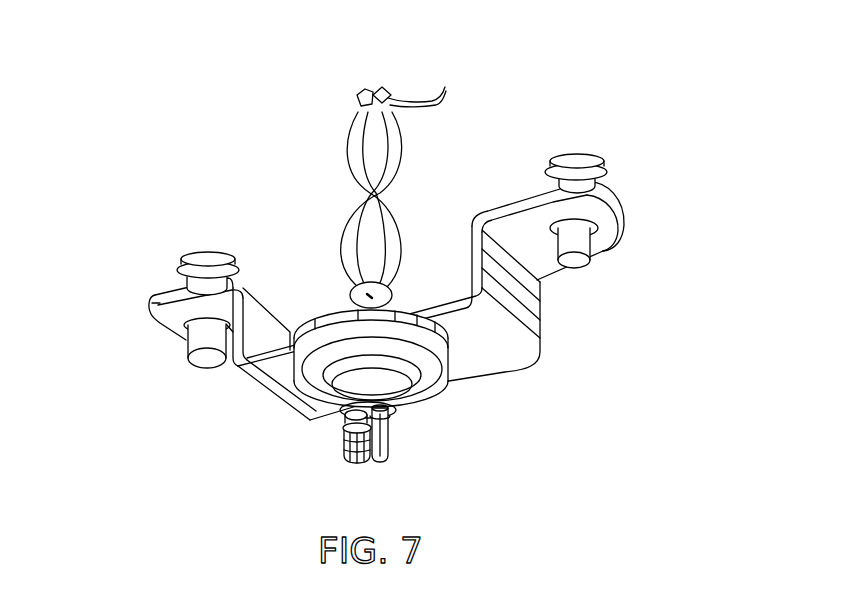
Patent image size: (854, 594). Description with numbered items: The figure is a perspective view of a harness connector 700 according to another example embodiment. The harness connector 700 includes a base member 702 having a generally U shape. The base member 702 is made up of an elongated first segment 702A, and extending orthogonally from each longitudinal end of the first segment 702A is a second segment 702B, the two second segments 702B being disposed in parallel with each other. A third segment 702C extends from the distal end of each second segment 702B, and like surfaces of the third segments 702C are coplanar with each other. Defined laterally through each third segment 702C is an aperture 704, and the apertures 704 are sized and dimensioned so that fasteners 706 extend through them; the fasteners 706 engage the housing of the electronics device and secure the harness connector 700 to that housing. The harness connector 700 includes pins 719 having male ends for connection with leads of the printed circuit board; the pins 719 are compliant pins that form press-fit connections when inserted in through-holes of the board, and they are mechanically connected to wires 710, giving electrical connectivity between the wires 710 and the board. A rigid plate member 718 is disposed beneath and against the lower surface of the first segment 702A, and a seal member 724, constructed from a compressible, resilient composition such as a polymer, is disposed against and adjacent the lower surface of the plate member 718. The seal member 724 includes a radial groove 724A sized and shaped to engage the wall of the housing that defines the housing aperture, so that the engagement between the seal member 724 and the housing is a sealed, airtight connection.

The harness connector 700 is at (126, 35).
The base member 702 is at (645, 281).
The first segment 702A is at (475, 369).
The second segment 702B is at (258, 315).
The third segment 702C is at (160, 294).
The aperture 704 is at (160, 333).
The fastener 706 is at (204, 254).
The wire 710 is at (400, 174).
The plate member 718 is at (396, 310).
The pin 719 is at (377, 462).
The seal member 724 is at (349, 375).
The radial groove 724A is at (443, 385).